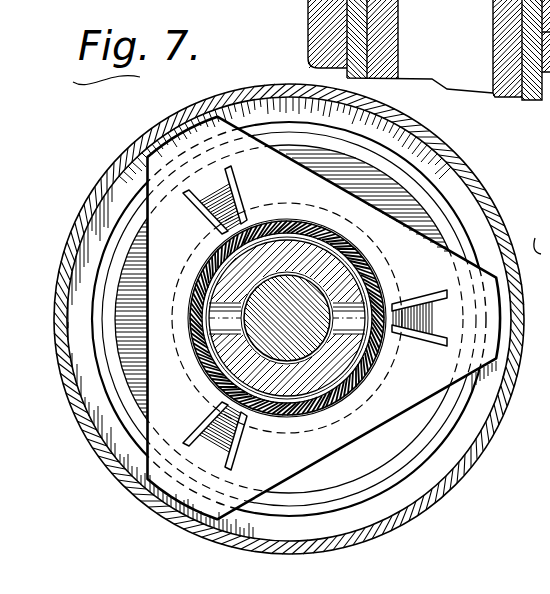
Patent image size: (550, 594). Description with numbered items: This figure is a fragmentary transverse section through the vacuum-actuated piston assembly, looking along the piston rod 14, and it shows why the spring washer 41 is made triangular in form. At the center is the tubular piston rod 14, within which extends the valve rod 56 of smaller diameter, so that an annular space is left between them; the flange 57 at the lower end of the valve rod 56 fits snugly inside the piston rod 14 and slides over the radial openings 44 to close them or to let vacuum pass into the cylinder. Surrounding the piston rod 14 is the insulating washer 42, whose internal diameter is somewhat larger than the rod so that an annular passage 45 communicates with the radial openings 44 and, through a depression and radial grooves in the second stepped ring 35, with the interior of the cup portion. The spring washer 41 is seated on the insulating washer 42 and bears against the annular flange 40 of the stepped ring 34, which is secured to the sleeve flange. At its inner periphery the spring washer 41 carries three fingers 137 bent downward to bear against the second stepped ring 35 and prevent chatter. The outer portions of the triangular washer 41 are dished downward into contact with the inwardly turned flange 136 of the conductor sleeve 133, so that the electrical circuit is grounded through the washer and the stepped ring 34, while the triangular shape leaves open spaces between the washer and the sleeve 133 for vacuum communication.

The conductor sleeve 133 is at (121, 158).
The inwardly turned flange 136 is at (451, 420).
The annular flange 40 is at (428, 208).
The stepped ring 34 is at (137, 367).
The spring washer 41 is at (366, 210).
The fingers 137 is at (247, 198).
The second stepped ring 35 is at (397, 293).
The annular passage 45 is at (337, 404).
The radial openings 44 is at (190, 302).
The insulating washer 42 is at (323, 405).
The piston rod 14 is at (350, 267).
The valve rod 56 is at (297, 344).
The flange 57 is at (535, 233).